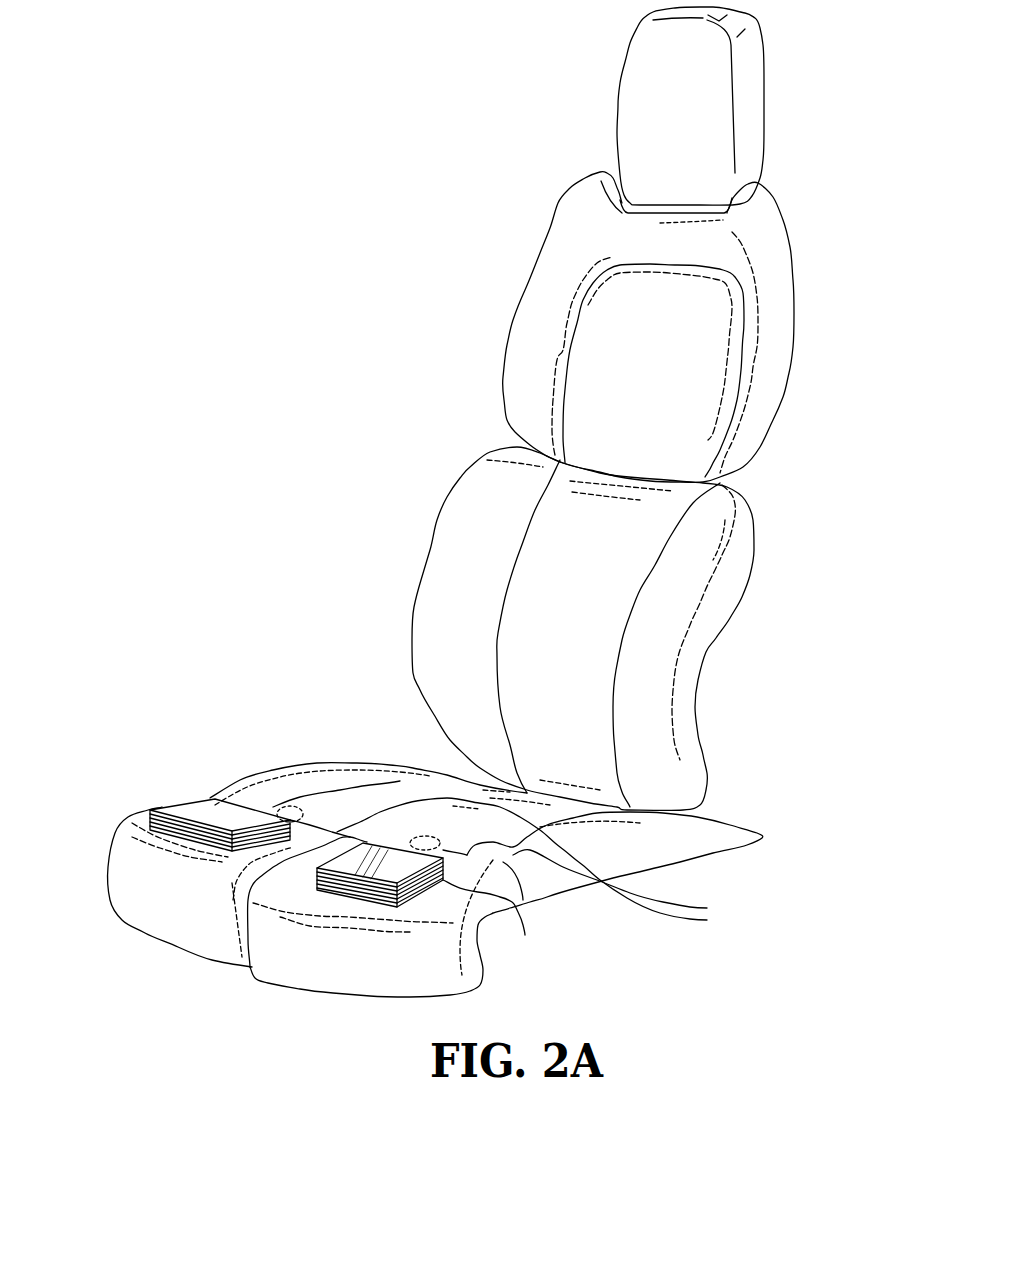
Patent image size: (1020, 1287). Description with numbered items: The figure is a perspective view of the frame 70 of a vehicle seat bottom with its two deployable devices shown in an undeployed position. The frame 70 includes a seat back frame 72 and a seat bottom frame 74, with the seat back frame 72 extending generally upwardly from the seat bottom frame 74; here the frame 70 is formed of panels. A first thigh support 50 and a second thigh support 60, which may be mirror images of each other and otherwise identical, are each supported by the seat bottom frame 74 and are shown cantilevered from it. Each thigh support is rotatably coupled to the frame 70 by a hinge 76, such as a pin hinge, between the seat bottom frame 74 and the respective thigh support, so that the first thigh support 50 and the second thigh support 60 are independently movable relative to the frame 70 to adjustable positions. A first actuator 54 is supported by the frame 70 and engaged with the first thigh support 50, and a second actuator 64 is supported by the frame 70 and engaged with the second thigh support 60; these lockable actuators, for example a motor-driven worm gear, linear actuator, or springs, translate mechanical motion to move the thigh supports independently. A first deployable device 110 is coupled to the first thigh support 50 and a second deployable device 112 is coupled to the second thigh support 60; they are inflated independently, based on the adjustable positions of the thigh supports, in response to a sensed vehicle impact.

The frame 70 is at (437, 338).
The seat back frame 72 is at (428, 553).
The seat bottom frame 74 is at (317, 763).
The hinge 76 is at (707, 920).
The first thigh support 50 is at (147, 930).
The second thigh support 60 is at (333, 993).
The first deployable device 110 is at (183, 802).
The second deployable device 112 is at (487, 905).
The first actuator 54 is at (303, 803).
The second actuator 64 is at (440, 836).